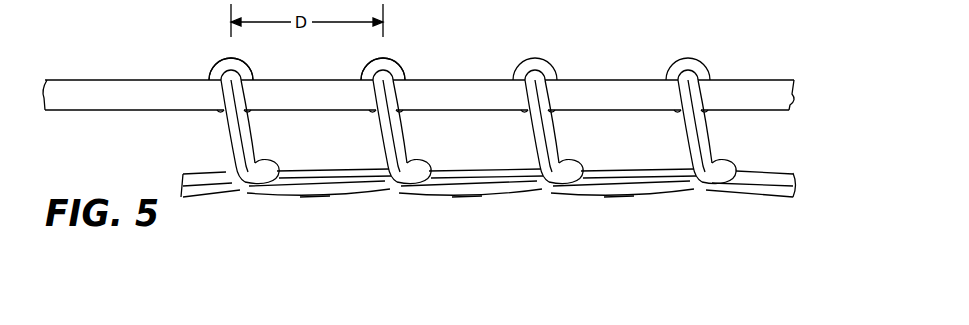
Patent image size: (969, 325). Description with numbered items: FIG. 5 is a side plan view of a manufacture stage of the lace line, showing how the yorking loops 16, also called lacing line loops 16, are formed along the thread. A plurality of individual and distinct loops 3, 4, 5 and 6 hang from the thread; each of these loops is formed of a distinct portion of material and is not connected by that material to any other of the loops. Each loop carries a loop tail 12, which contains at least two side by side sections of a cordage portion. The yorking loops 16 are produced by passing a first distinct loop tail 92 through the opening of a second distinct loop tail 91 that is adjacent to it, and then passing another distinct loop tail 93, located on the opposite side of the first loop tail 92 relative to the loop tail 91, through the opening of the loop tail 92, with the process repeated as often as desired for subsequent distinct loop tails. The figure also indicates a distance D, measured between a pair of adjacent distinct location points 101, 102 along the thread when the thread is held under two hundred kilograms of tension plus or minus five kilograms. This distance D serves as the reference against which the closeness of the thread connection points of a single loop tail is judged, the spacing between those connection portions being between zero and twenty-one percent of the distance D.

The loop 3 is at (253, 148).
The loop 4 is at (406, 148).
The loop 5 is at (558, 149).
The loop 6 is at (712, 149).
The loop tail 12 is at (380, 190).
The yorking loop 16 is at (320, 173).
The second distinct loop tail 91 is at (307, 197).
The first distinct loop tail 92 is at (460, 197).
The distinct loop tail 93 is at (612, 197).
The adjacent distinct location point 101 is at (230, 68).
The adjacent distinct location point 102 is at (383, 68).